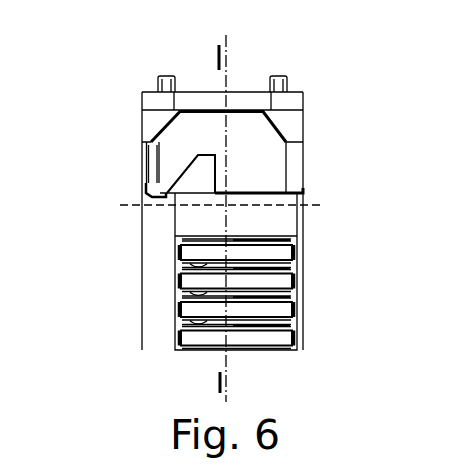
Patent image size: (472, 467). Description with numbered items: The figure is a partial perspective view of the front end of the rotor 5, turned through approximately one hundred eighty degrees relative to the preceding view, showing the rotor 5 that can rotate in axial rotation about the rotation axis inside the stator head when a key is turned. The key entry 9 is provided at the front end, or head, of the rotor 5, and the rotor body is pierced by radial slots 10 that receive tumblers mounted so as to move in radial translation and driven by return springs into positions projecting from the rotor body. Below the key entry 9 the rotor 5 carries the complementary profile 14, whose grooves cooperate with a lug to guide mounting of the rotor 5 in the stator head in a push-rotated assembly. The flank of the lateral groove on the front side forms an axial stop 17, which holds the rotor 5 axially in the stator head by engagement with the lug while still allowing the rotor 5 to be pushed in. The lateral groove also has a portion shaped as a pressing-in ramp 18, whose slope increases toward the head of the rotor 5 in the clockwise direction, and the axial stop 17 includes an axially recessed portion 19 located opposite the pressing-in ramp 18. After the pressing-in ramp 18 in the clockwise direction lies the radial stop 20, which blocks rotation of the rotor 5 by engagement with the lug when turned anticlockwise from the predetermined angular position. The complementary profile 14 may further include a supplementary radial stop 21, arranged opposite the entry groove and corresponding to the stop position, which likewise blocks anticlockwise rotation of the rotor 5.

The rotor 5 is at (121, 98).
The key entry 9 is at (238, 92).
The radial slots 10 is at (292, 304).
The complementary profile 14 is at (281, 166).
The axial stop 17 is at (305, 142).
The pressing-in ramp 18 is at (153, 163).
The axially recessed portion 19 is at (195, 108).
The radial stop 20 is at (217, 170).
The supplementary radial stop 21 is at (152, 170).